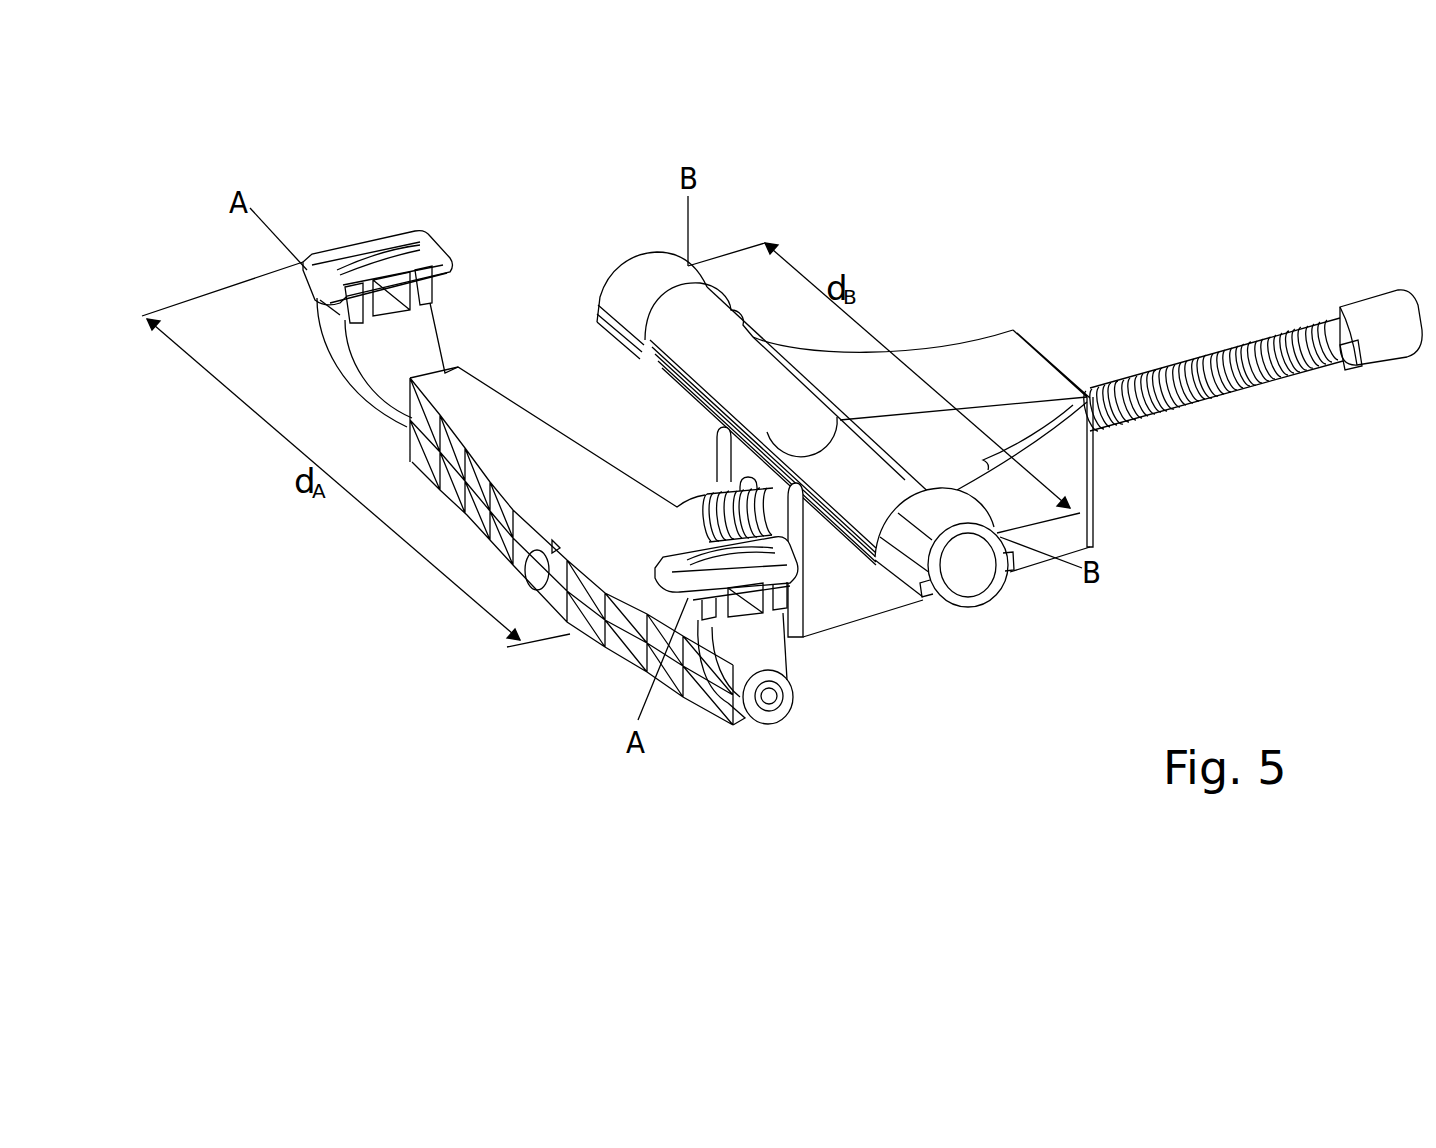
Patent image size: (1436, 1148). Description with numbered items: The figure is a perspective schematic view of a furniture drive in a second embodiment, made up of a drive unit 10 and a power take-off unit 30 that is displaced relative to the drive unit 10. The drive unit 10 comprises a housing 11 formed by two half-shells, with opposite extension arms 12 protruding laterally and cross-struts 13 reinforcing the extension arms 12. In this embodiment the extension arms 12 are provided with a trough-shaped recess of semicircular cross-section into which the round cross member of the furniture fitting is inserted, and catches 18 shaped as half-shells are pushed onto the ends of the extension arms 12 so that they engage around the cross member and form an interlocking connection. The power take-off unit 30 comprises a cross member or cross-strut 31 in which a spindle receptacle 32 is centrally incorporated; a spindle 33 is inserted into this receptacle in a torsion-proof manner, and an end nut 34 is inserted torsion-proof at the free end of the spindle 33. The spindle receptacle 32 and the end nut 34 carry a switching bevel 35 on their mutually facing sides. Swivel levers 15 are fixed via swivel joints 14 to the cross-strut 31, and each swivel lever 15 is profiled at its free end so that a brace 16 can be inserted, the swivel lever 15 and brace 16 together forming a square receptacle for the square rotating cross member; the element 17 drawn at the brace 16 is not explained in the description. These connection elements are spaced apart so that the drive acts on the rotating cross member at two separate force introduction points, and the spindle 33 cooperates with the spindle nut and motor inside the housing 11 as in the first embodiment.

The drive unit 10 is at (1122, 580).
The housing 11 is at (983, 363).
The extension arm 12 is at (756, 338).
The cross-strut 13 is at (870, 383).
The swivel joint 14 is at (770, 703).
The swivel lever 15 is at (378, 347).
The brace 16 is at (430, 260).
The profile slot 17 is at (393, 287).
The catch 18 is at (665, 277).
The power take-off unit 30 is at (568, 637).
The cross-strut 31 is at (618, 642).
The spindle receptacle 32 is at (675, 505).
The spindle 33 is at (1288, 337).
The end nut 34 is at (1385, 303).
The switching bevel 35 is at (693, 487).